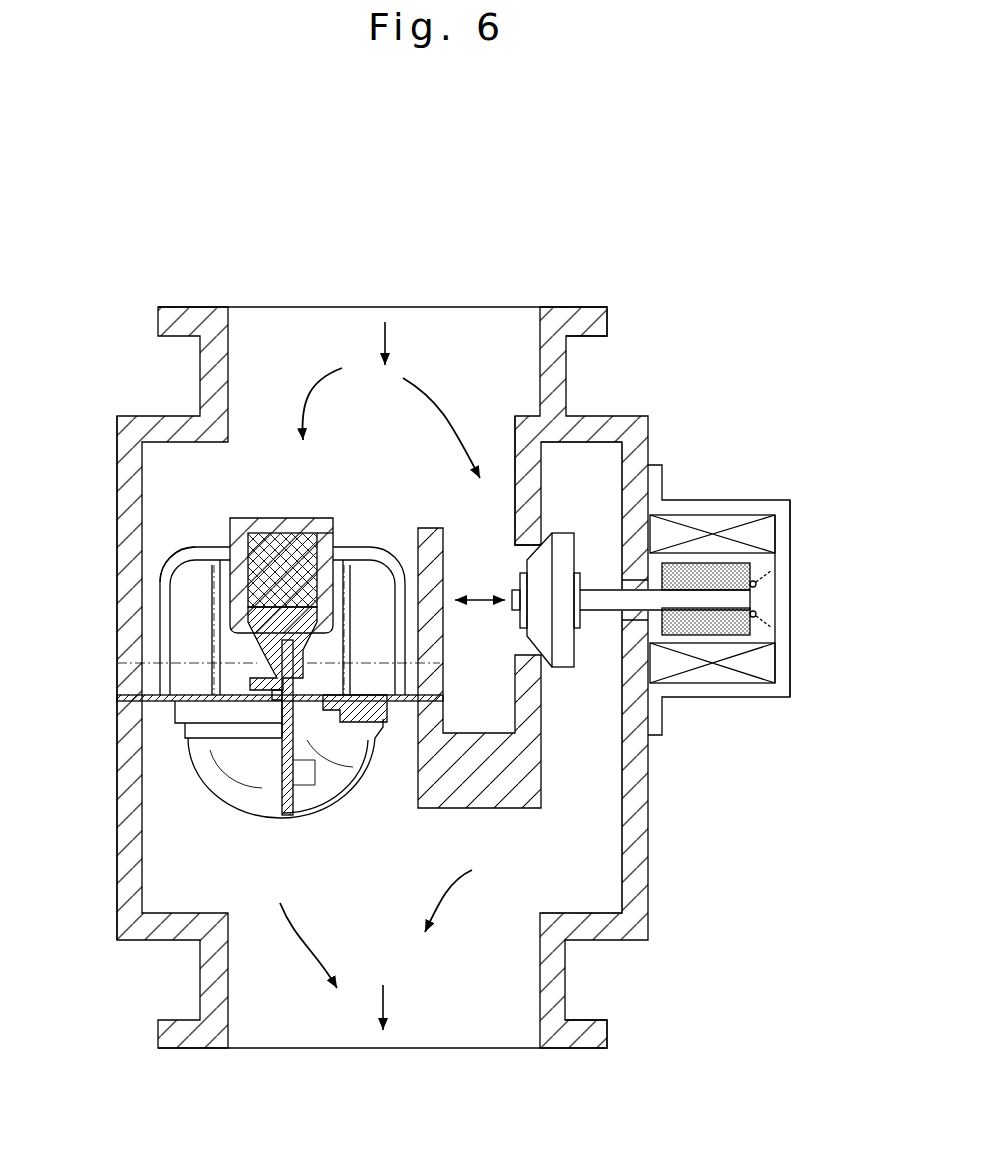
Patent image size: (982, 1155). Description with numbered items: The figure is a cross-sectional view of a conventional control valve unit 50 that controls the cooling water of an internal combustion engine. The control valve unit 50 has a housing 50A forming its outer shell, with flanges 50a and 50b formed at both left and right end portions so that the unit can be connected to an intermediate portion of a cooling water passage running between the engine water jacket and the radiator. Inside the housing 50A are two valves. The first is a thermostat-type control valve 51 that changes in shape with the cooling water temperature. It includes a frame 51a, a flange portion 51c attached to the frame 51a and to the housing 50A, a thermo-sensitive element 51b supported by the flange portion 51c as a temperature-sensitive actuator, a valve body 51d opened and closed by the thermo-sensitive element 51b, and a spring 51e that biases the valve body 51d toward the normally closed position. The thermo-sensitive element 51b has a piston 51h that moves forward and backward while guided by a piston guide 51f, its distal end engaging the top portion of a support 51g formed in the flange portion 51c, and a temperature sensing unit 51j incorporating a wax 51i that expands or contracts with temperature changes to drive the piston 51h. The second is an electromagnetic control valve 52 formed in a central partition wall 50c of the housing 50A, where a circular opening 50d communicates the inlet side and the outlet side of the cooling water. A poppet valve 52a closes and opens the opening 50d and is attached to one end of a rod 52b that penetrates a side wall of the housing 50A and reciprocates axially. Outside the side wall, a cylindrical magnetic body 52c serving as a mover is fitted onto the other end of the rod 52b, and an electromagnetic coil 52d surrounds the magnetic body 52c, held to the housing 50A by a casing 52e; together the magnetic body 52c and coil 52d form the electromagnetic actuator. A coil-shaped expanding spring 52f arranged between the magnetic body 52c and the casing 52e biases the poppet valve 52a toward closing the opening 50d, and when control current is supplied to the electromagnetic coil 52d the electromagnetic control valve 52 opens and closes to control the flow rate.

The control valve unit 50 is at (377, 618).
The flange 50a is at (643, 292).
The flange 50b is at (643, 1043).
The central partition wall 50c is at (479, 693).
The circular opening 50d is at (495, 484).
The housing 50A is at (71, 678).
The thermostat-type control valve 51 is at (310, 516).
The frame 51a is at (295, 579).
The thermo-sensitive element 51b is at (234, 648).
The flange portion 51c is at (235, 716).
The valve body 51d is at (382, 776).
The spring 51e is at (119, 541).
The piston guide 51f is at (210, 781).
The support 51g is at (249, 787).
The piston 51h is at (251, 769).
The wax 51i is at (281, 538).
The temperature sensing unit 51j is at (365, 498).
The electromagnetic control valve 52 is at (640, 628).
The poppet valve 52a is at (602, 642).
The rod 52b is at (712, 546).
The cylindrical magnetic body 52c is at (732, 515).
The electromagnetic coil 52d is at (719, 632).
The casing 52e is at (821, 649).
The coil-shaped expanding spring 52f is at (795, 534).